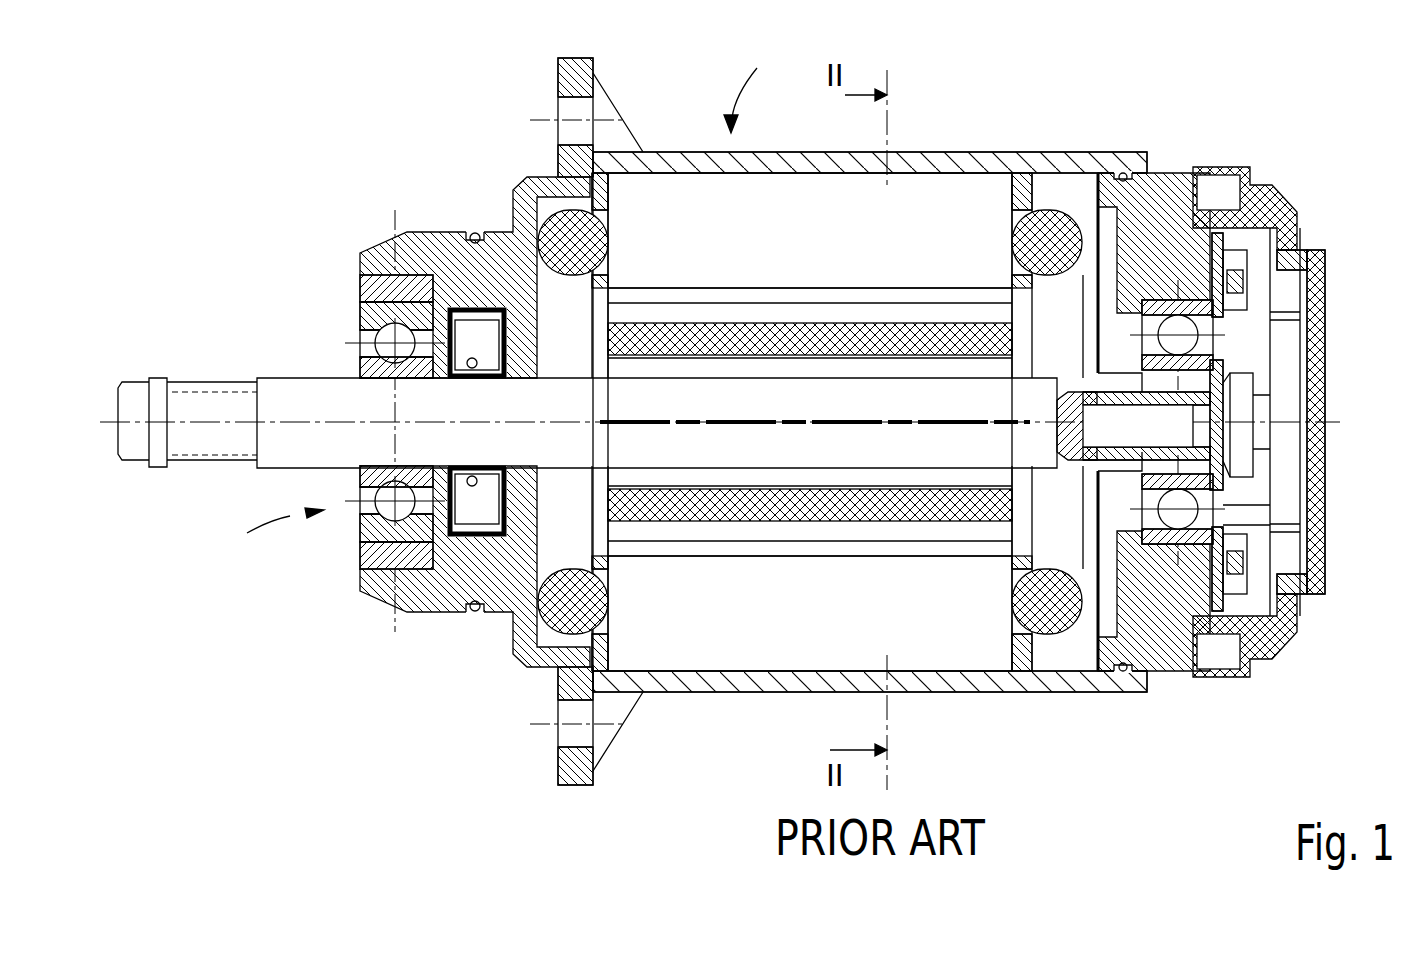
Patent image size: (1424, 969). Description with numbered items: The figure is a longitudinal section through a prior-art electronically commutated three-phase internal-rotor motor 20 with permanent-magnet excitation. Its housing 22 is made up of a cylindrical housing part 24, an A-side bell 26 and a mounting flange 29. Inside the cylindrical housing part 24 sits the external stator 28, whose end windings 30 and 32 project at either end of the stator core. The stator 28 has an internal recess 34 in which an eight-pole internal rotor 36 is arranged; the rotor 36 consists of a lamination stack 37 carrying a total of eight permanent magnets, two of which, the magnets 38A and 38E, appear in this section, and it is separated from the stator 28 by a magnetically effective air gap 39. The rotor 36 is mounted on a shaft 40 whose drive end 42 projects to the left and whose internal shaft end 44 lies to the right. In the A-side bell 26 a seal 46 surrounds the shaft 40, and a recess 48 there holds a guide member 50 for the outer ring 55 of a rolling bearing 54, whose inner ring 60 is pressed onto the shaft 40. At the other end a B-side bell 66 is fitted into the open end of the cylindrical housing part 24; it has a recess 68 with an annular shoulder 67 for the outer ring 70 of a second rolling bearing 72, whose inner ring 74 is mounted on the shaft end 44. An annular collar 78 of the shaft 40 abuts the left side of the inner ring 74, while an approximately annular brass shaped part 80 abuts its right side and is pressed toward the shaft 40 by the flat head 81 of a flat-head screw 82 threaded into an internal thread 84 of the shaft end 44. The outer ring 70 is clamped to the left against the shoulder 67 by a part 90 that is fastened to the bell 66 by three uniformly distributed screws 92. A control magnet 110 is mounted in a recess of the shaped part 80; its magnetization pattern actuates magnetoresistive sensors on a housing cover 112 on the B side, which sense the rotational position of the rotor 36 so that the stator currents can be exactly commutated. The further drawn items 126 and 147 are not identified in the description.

The internal-rotor motor 20 is at (795, 74).
The housing 22 is at (505, 162).
The cylindrical housing part 24 is at (657, 160).
The A-side bell 26 is at (437, 600).
The external stator 28 is at (804, 230).
The mounting flange 29 is at (585, 72).
The end winding 30 is at (572, 277).
The end winding 32 is at (1045, 213).
The internal recess 34 is at (655, 298).
The internal rotor 36 is at (813, 388).
The lamination stack 37 is at (660, 540).
The permanent magnet 38A is at (877, 327).
The permanent magnet 38E is at (835, 507).
The air gap 39 is at (718, 300).
The shaft 40 is at (709, 464).
The drive end 42 is at (197, 400).
The internal shaft end 44 is at (1157, 467).
The seal 46 is at (472, 305).
The recess 48 is at (348, 262).
The guide member 50 is at (353, 287).
The rolling bearing 54 is at (207, 557).
The outer ring 55 is at (358, 318).
The inner ring 60 is at (357, 363).
The B-side bell 66 is at (1150, 175).
The annular shoulder 67 is at (1143, 520).
The recess 68 is at (1178, 555).
The outer ring 70 is at (1285, 650).
The rolling bearing 72 is at (1267, 520).
The inner ring 74 is at (1300, 527).
The annular collar 78 is at (1118, 370).
The shaped part 80 is at (1330, 333).
The flat head 81 is at (1277, 392).
The flat-head screw 82 is at (1060, 402).
The internal thread 84 is at (1060, 438).
The clamping part 90 is at (1278, 192).
The screws 92 is at (1273, 282).
The control magnet 110 is at (1305, 440).
The housing cover 112 is at (1322, 598).
The stator end plate 126 is at (925, 378).
The housing end face 147 is at (1088, 172).